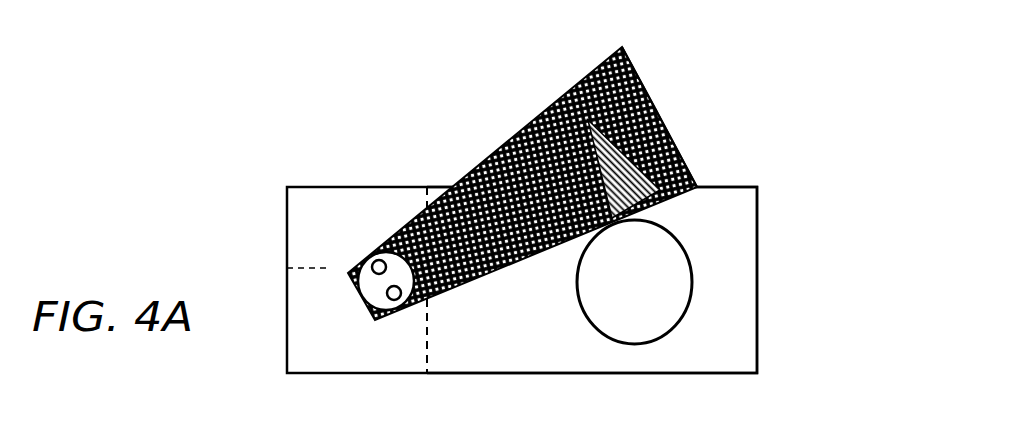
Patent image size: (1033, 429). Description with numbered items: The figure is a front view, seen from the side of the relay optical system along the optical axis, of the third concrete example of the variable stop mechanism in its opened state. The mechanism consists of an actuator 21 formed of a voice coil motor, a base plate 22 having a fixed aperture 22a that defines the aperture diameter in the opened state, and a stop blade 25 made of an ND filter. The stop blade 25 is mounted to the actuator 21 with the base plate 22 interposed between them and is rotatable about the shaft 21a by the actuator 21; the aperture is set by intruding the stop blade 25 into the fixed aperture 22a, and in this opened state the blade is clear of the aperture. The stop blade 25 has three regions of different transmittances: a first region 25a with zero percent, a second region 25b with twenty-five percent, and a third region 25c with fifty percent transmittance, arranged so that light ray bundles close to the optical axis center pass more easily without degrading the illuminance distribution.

The actuator 21 is at (287, 268).
The shaft 21a is at (392, 236).
The base plate 22 is at (733, 220).
The fixed aperture 22a is at (653, 277).
The stop blade 25 is at (515, 133).
The first region 25a is at (643, 83).
The second region 25b is at (657, 110).
The third region 25c is at (677, 147).